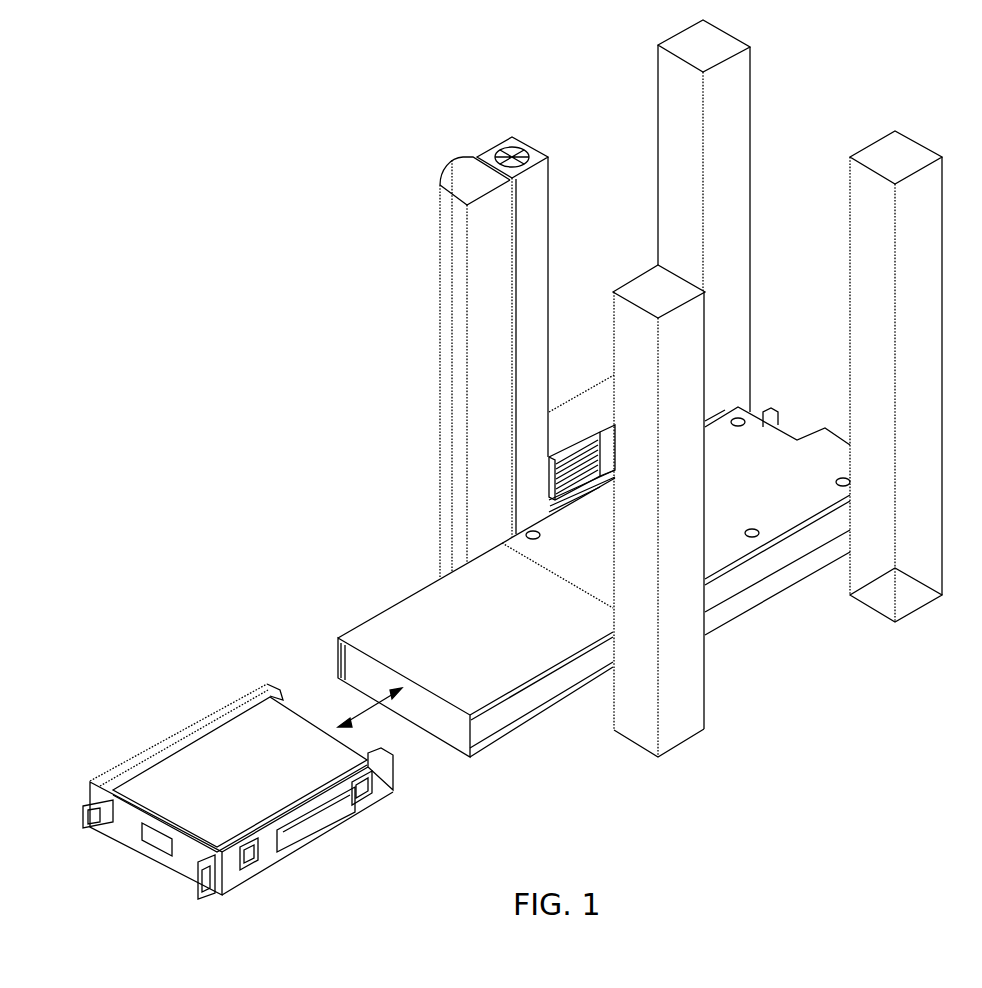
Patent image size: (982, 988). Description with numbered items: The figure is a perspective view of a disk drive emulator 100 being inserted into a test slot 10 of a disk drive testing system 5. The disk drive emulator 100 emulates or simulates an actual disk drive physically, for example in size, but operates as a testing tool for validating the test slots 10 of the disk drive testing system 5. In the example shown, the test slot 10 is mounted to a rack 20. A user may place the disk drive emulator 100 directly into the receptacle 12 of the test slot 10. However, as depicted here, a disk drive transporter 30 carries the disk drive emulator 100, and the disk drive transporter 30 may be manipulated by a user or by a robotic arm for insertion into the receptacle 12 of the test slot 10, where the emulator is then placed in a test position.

The disk drive testing system 5 is at (404, 313).
The test slot 10 is at (559, 617).
The receptacle 12 is at (361, 673).
The rack 20 is at (442, 395).
The disk drive transporter 30 is at (238, 761).
The disk drive emulator 100 is at (253, 763).